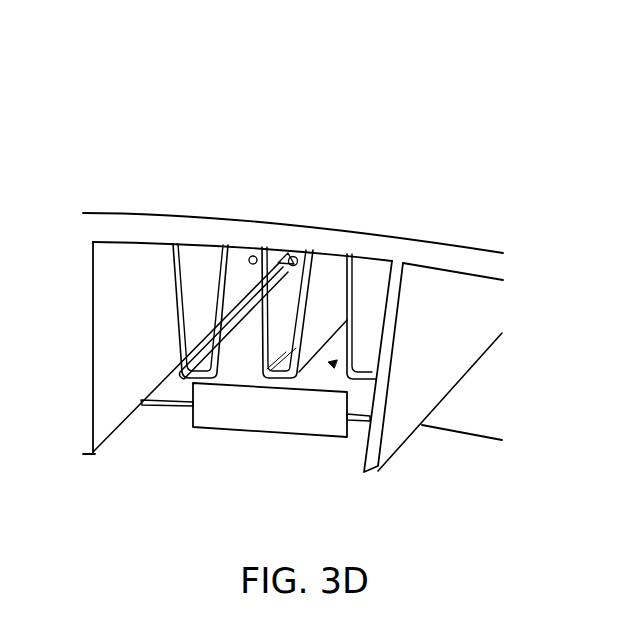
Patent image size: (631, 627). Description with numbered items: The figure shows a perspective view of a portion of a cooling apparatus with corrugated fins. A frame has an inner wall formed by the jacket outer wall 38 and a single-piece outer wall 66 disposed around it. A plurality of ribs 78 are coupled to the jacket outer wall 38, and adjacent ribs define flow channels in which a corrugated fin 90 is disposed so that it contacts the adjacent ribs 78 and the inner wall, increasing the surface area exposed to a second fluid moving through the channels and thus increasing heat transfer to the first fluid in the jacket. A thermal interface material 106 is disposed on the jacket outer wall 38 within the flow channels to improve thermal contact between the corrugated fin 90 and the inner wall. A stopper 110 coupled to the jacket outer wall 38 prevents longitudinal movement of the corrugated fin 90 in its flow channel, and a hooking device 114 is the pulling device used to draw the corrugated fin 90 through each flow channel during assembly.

The outer wall 66 is at (305, 150).
The plurality of ribs 78 is at (117, 340).
The jacket outer wall 38 is at (148, 418).
The hooking device 114 is at (244, 304).
The corrugated fin 90 is at (333, 364).
The stopper 110 is at (268, 410).
The thermal interface material 106 is at (480, 422).